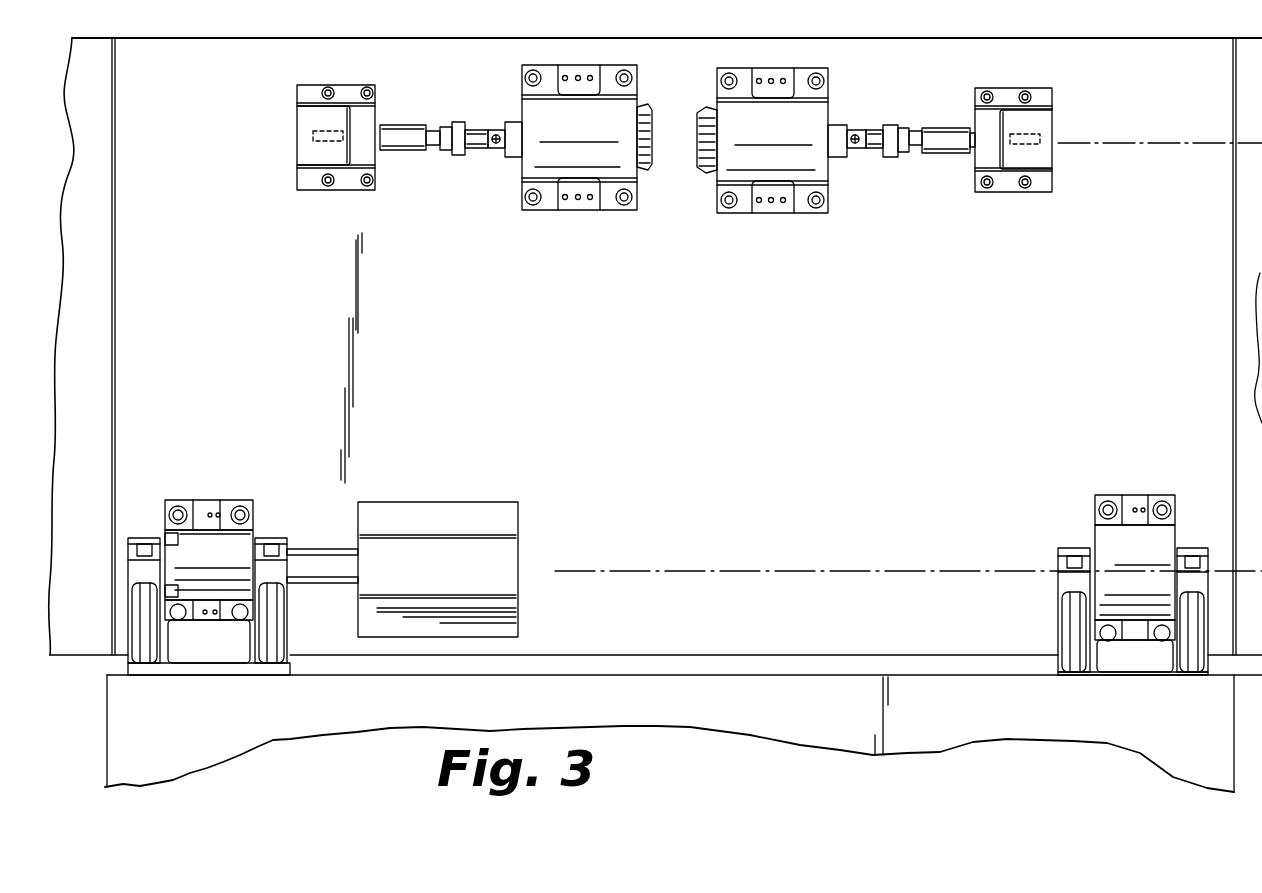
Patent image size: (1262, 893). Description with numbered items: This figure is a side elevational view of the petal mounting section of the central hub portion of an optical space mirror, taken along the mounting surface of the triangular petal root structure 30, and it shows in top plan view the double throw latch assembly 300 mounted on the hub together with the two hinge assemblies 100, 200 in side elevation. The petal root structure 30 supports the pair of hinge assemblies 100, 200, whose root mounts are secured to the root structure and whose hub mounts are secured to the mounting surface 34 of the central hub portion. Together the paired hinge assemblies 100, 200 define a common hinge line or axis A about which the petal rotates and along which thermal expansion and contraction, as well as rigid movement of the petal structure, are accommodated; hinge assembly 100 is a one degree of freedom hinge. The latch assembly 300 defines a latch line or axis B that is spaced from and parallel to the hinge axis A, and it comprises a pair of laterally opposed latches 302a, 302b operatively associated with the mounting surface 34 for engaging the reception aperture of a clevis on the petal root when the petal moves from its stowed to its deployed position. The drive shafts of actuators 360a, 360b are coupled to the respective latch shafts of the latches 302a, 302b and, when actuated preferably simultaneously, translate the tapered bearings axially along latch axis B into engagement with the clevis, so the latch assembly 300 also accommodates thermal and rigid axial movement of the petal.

The petal root structure 30 is at (557, 675).
The mounting surface 34 is at (742, 435).
The hinge assembly 100 is at (238, 450).
The hinge assembly 200 is at (1110, 478).
The latch assembly 300 is at (680, 209).
The latch 302a is at (547, 210).
The latch 302b is at (802, 215).
The actuator 360a is at (312, 190).
The actuator 360b is at (1030, 193).
The hinge axis A is at (792, 565).
The latch axis B is at (1175, 148).